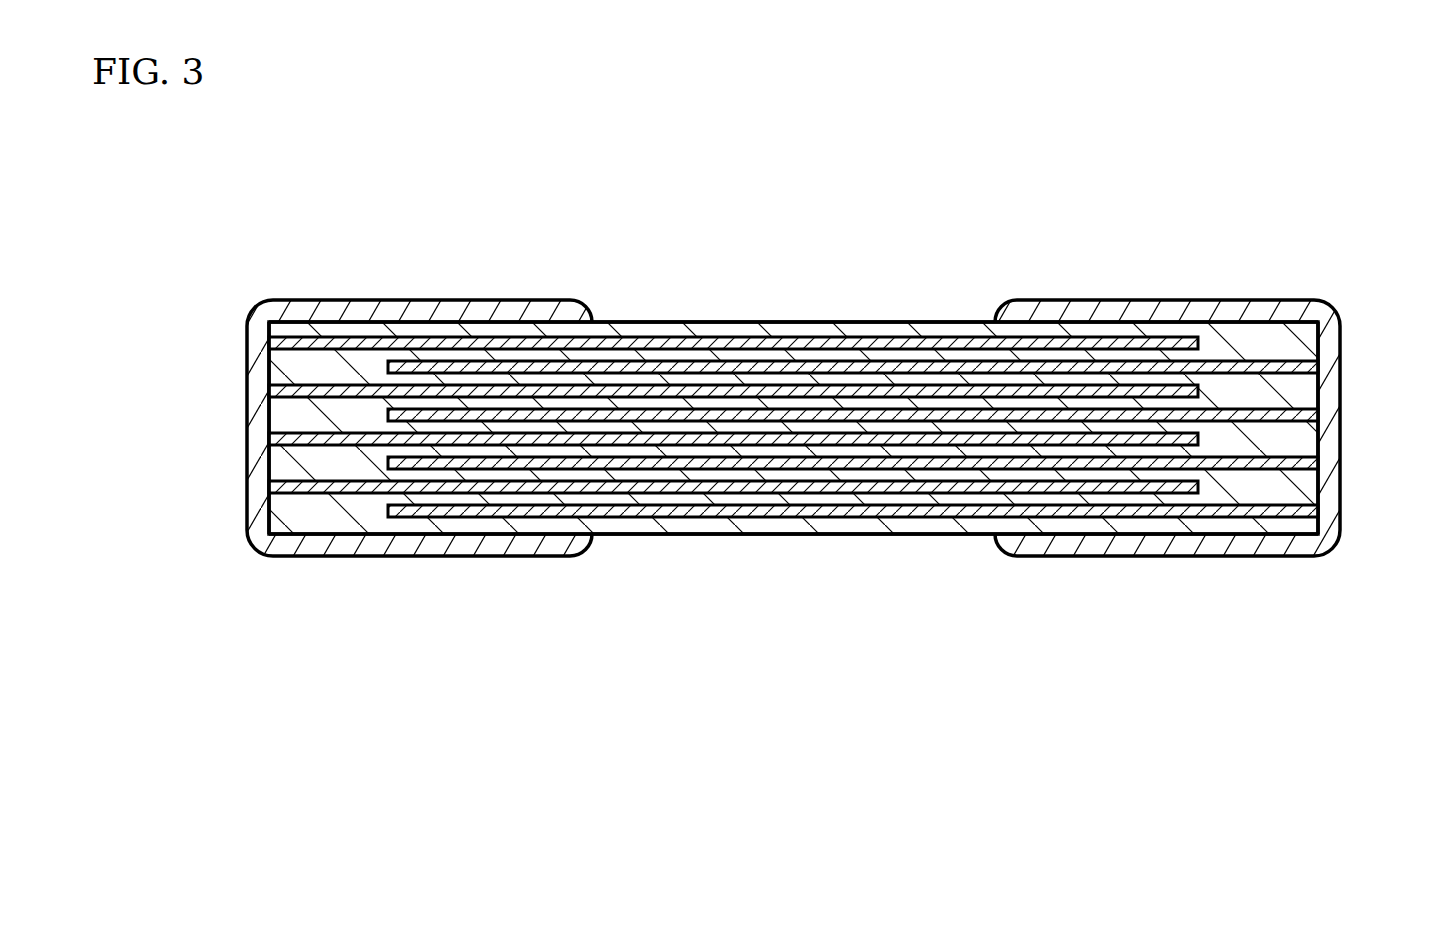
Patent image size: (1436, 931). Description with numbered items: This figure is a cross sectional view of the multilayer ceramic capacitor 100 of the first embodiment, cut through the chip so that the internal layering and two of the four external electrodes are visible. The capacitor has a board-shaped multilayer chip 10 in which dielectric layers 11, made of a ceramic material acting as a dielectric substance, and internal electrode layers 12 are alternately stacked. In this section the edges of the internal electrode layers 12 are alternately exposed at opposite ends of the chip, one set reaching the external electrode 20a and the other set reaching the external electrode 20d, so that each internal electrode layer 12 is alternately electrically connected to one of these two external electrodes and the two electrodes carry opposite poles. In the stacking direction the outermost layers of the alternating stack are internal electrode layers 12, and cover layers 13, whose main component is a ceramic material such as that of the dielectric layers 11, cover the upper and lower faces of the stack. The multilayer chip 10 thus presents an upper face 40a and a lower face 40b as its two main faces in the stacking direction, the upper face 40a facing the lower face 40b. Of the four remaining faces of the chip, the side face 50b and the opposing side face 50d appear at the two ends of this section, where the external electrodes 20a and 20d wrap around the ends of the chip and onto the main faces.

The multilayer ceramic capacitor 100 is at (165, 198).
The multilayer chip 10 is at (793, 410).
The dielectric layers 11 is at (765, 440).
The internal electrode layers 12 is at (768, 392).
The cover layers 13 is at (960, 330).
The external electrode 20a is at (1195, 298).
The external electrode 20d is at (390, 298).
The upper face 40a is at (891, 322).
The lower face 40b is at (903, 535).
The side face 50b is at (1318, 440).
The side face 50d is at (270, 406).